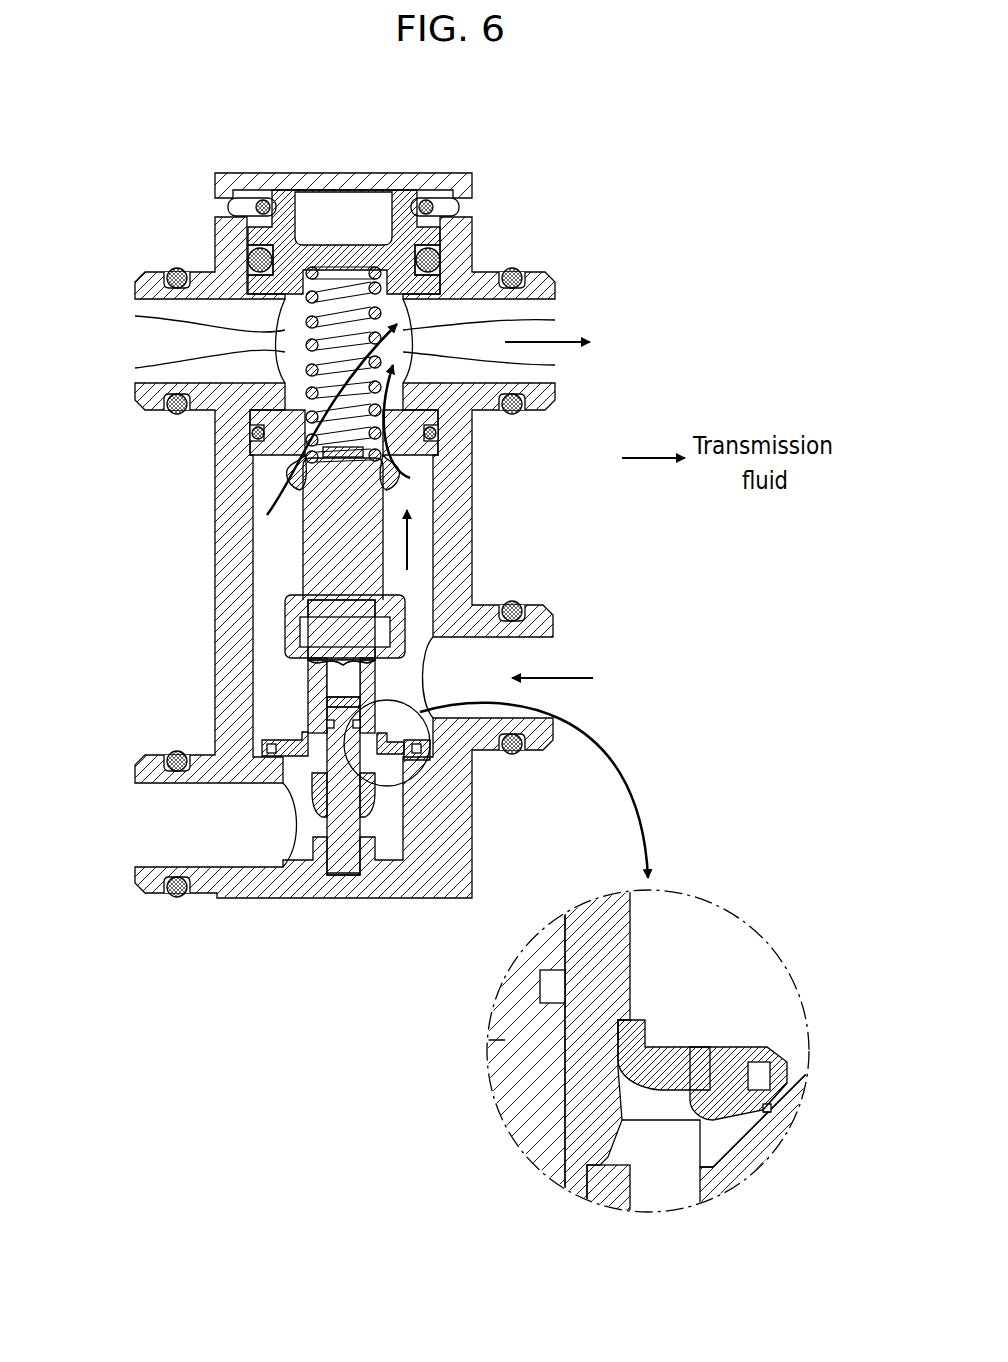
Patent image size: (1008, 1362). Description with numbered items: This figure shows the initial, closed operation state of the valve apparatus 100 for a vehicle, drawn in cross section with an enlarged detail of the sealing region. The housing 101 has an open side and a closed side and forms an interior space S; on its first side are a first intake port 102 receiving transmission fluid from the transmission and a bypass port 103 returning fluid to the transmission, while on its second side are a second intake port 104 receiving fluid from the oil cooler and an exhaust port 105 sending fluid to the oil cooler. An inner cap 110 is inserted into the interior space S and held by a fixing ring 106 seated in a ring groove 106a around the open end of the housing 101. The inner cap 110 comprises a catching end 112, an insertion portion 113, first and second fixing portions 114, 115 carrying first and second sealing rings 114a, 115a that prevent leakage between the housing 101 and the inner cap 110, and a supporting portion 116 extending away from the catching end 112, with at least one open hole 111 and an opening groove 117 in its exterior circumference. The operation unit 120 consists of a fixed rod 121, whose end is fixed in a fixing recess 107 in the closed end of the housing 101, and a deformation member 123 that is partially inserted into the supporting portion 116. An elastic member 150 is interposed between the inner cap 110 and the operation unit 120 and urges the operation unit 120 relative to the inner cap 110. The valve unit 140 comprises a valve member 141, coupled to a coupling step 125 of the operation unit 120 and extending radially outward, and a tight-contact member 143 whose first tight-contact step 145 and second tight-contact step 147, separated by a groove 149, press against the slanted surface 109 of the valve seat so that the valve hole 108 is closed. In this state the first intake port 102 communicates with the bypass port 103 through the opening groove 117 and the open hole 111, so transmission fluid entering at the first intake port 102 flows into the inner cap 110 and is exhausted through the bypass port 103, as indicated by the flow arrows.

The valve apparatus 100 is at (512, 140).
The housing 101 is at (465, 240).
The first intake port 102 is at (545, 612).
The bypass port 103 is at (542, 282).
The second intake port 104 is at (147, 405).
The exhaust port 105 is at (148, 880).
The fixing ring 106 is at (437, 204).
The ring groove 106a is at (452, 212).
The fixing recess 107 is at (362, 888).
The valve hole 108 is at (262, 752).
The slanted surface 109 is at (268, 725).
The inner cap 110 is at (400, 188).
The open hole 111 is at (540, 375).
The catching end 112 is at (247, 227).
The insertion portion 113 is at (255, 342).
The first fixing portion 114 is at (250, 285).
The first sealing ring 114a is at (247, 260).
The second fixing portion 115 is at (255, 420).
The second sealing ring 115a is at (258, 442).
The supporting portion 116 is at (297, 478).
The opening groove 117 is at (288, 464).
The operation unit 120 is at (283, 632).
The fixed rod 121 is at (400, 838).
The deformation member 123 is at (335, 568).
The coupling step 125 is at (625, 1032).
The valve unit 140 is at (549, 926).
The valve member 141 is at (385, 800).
The tight-contact member 143 is at (405, 772).
The first tight-contact step 145 is at (775, 1106).
The second tight-contact step 147 is at (762, 1120).
The groove 149 is at (772, 1114).
The elastic member 150 is at (525, 318).
The interior space S is at (422, 530).